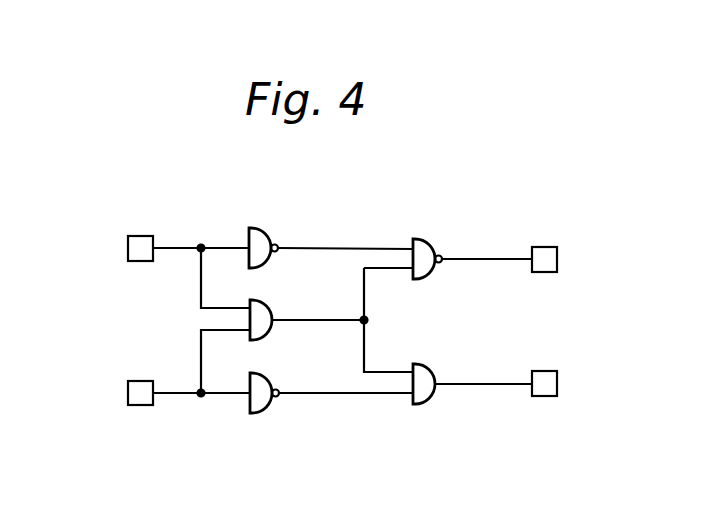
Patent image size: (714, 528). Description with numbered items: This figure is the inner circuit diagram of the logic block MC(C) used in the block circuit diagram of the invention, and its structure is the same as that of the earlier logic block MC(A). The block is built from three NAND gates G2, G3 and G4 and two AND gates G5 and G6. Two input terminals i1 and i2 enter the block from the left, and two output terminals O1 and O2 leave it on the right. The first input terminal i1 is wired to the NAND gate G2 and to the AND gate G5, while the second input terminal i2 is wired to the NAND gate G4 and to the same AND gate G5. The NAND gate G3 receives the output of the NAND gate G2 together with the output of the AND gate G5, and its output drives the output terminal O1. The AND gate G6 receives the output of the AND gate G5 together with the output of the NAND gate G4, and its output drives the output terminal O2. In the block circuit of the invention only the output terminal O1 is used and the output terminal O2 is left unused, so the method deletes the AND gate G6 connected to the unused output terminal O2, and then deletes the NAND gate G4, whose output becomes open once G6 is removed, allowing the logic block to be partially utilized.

The input terminal i1 is at (128, 247).
The input terminal i2 is at (128, 392).
The output terminal O1 is at (557, 259).
The output terminal O2 is at (558, 383).
The NAND gate G2 is at (262, 229).
The NAND gate G3 is at (427, 240).
The NAND gate G4 is at (267, 410).
The AND gate G5 is at (266, 304).
The AND gate G6 is at (427, 404).